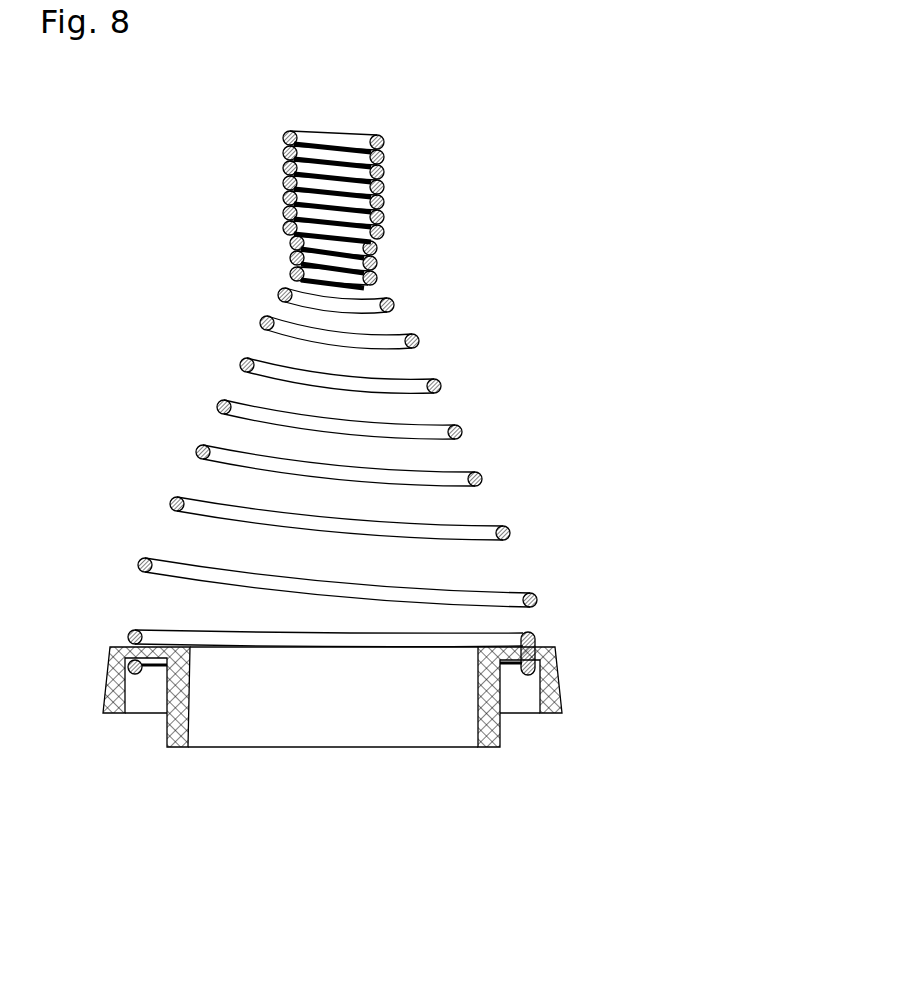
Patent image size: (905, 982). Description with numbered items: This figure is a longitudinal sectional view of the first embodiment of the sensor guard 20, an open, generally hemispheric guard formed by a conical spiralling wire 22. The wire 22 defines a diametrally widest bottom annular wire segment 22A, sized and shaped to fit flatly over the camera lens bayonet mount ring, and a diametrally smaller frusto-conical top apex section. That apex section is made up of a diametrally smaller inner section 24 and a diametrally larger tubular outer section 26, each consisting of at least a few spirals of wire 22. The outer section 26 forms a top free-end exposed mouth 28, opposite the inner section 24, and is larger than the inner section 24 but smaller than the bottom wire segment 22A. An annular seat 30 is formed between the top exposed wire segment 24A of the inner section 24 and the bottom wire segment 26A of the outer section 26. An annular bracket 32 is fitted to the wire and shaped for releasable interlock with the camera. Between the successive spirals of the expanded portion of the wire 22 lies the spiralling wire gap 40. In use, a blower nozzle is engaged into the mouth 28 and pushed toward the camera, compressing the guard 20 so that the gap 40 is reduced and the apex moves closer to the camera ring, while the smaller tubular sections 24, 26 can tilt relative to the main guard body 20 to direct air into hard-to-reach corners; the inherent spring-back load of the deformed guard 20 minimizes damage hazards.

The sensor guard 20 is at (450, 406).
The conical spiralling wire 22 is at (252, 362).
The bottom annular wire segment 22A is at (510, 670).
The inner section 24 is at (377, 263).
The top exposed wire segment 24A is at (288, 243).
The tubular outer section 26 is at (382, 163).
The bottom wire segment 26A is at (384, 232).
The exposed mouth 28 is at (362, 137).
The annular seat 30 is at (304, 229).
The annular bracket 32 is at (167, 733).
The spiralling wire gap 40 is at (516, 473).